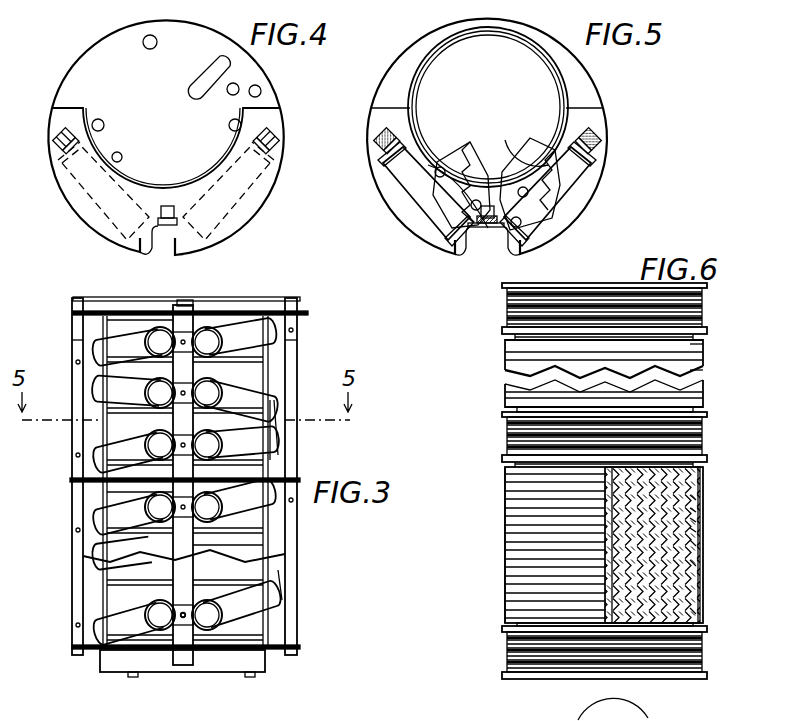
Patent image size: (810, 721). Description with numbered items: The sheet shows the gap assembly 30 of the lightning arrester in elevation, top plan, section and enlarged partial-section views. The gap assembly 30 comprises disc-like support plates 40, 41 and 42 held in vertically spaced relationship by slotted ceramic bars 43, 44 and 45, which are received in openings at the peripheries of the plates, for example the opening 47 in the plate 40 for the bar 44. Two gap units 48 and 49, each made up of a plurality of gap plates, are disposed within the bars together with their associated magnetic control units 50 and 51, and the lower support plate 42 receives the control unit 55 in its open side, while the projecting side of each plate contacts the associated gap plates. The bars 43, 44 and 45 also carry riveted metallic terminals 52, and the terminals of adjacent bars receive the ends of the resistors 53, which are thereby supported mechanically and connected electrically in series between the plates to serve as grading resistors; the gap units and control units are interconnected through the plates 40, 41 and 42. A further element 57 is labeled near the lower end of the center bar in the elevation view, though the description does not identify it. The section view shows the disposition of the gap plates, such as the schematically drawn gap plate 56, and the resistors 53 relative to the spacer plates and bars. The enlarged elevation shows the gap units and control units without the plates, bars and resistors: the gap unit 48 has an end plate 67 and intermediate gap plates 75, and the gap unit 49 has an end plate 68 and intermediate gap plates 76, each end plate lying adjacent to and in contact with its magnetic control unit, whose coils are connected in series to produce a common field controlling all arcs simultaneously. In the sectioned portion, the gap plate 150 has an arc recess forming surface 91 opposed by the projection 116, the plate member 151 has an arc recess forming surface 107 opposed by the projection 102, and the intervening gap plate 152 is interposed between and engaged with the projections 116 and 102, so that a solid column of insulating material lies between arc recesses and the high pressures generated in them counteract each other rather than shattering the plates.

In FIG. 3, the gap assembly 30 is at (308, 524).
In FIG. 6, the gap assembly 30 is at (492, 484).
In FIG. 4, the support plate 40 is at (74, 76).
In FIG. 3, the support plate 40 is at (73, 313).
In FIG. 5, the support plate 41 is at (440, 228).
In FIG. 3, the support plate 41 is at (72, 480).
In FIG. 3, the support plate 42 is at (72, 647).
In FIG. 4, the ceramic bar 43 is at (56, 149).
In FIG. 5, the ceramic bar 43 is at (378, 150).
In FIG. 3, the ceramic bar 43 is at (74, 348).
In FIG. 4, the ceramic bar 44 is at (165, 228).
In FIG. 5, the ceramic bar 44 is at (486, 228).
In FIG. 3, the ceramic bar 44 is at (183, 312).
In FIG. 4, the ceramic bar 45 is at (276, 145).
In FIG. 5, the ceramic bar 45 is at (598, 152).
In FIG. 3, the ceramic bar 45 is at (300, 350).
In FIG. 4, the opening 47 is at (145, 256).
In FIG. 5, the opening 47 is at (462, 258).
In FIG. 3, the gap unit 48 is at (270, 455).
In FIG. 6, the gap unit 48 is at (506, 355).
In FIG. 3, the gap unit 49 is at (255, 548).
In FIG. 6, the gap unit 49 is at (508, 511).
In FIG. 3, the magnetic control unit 50 is at (112, 320).
In FIG. 6, the magnetic control unit 50 is at (506, 308).
In FIG. 3, the magnetic control unit 51 is at (110, 492).
In FIG. 6, the magnetic control unit 51 is at (506, 433).
In FIG. 5, the metallic terminal 52 is at (522, 246).
In FIG. 3, the metallic terminal 52 is at (196, 336).
In FIG. 4, the resistor 53 is at (92, 210).
In FIG. 5, the resistor 53 is at (406, 183).
In FIG. 3, the resistor 53 is at (252, 330).
In FIG. 3, the control unit 55 is at (104, 666).
In FIG. 6, the control unit 55 is at (506, 645).
In FIG. 5, the gap plate 56 is at (556, 88).
In FIG. 3, the pin 57 is at (178, 622).
In FIG. 6, the end gap plate 67 is at (703, 345).
In FIG. 6, the end gap plate 68 is at (696, 612).
In FIG. 6, the intermediate gap plate 75 is at (703, 369).
In FIG. 6, the intermediate gap plate 76 is at (508, 545).
In FIG. 6, the arc recess forming surface 91 is at (698, 490).
In FIG. 6, the projection 102 is at (694, 530).
In FIG. 6, the arc recess forming surface 107 is at (694, 562).
In FIG. 6, the projection 116 is at (694, 510).
In FIG. 6, the gap plate 150 is at (694, 500).
In FIG. 6, the plate member 151 is at (700, 542).
In FIG. 6, the intervening gap plate 152 is at (700, 520).